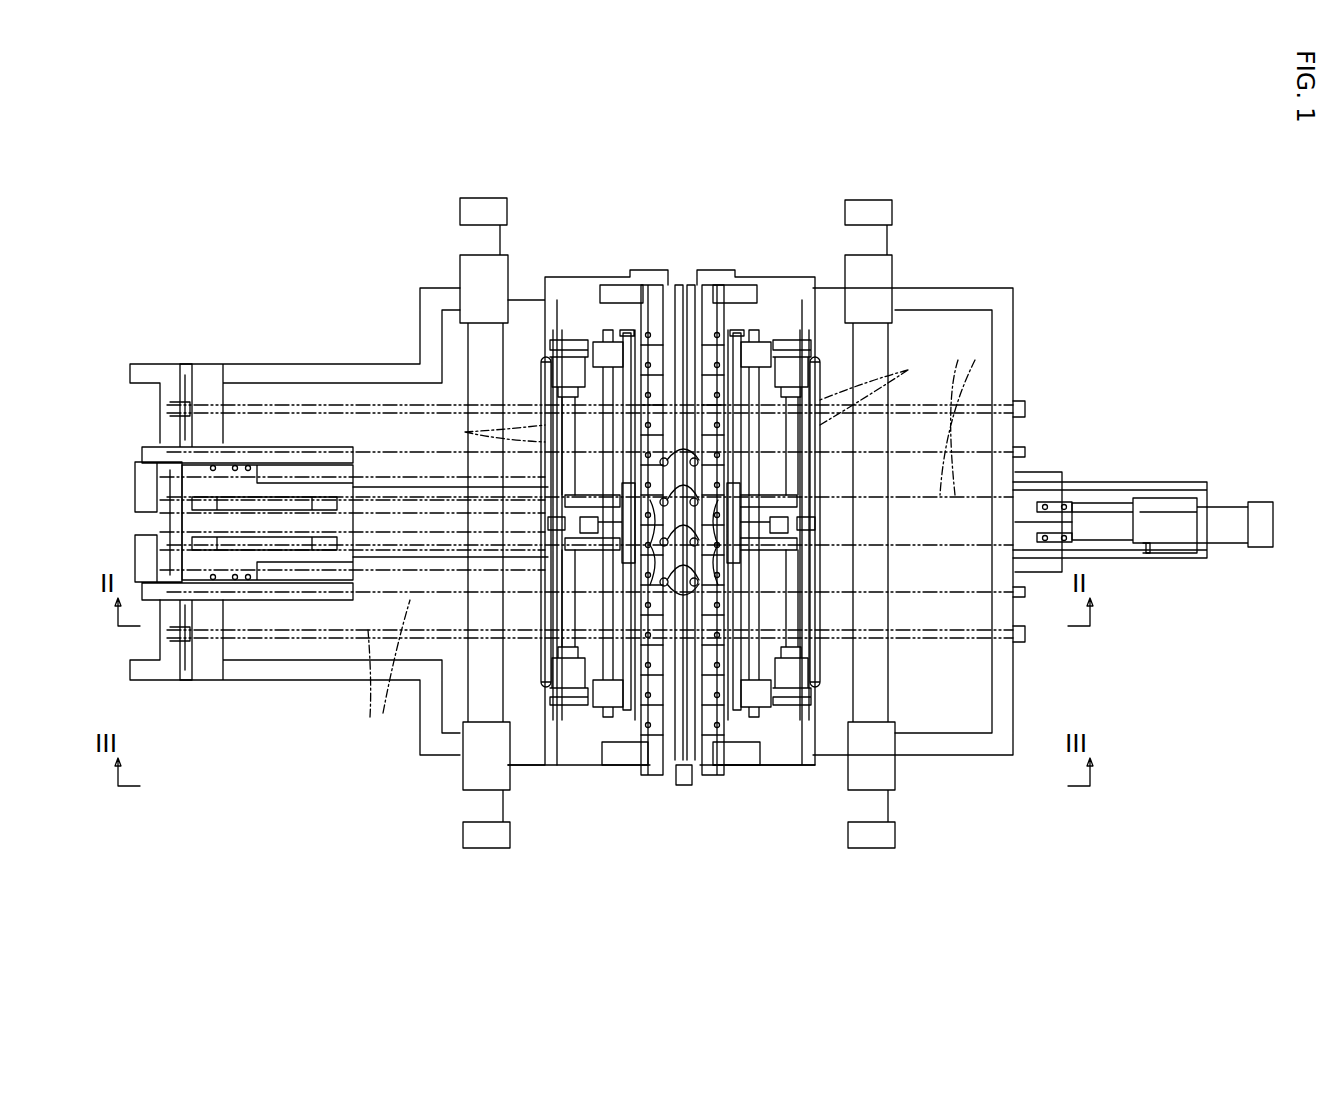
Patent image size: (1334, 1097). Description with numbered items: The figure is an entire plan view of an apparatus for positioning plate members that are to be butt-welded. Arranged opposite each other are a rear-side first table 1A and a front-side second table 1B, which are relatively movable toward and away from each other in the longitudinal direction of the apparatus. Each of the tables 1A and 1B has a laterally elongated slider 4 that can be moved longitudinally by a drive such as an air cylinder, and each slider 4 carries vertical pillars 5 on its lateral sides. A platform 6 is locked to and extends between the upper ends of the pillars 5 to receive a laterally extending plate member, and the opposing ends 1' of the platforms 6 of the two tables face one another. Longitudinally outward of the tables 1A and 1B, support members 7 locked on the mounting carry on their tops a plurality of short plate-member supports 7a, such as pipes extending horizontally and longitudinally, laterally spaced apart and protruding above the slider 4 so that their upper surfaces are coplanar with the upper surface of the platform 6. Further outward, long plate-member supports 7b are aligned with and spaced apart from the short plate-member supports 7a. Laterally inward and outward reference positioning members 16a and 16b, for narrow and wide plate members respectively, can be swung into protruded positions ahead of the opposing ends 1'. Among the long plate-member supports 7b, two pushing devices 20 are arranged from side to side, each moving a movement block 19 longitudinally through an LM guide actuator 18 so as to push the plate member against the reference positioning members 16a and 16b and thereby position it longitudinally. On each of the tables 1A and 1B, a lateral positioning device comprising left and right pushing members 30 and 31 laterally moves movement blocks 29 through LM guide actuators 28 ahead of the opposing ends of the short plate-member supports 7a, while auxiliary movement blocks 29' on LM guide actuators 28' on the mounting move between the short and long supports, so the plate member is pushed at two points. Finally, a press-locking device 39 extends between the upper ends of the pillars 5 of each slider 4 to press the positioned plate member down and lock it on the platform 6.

The first table 1A is at (622, 222).
The second table 1B is at (775, 270).
The opposing ends of the platforms 1' is at (685, 494).
The slider 4 is at (568, 767).
The pillar 5 is at (630, 292).
The platform 6 is at (686, 772).
The support member 7 is at (547, 455).
The short plate-member support 7a is at (687, 401).
The long plate-member support 7b is at (670, 544).
The laterally inward reference positioning member 16a is at (655, 545).
The laterally outward reference positioning member 16b is at (684, 458).
The LM guide actuator 18 is at (294, 478).
The movement block 19 is at (333, 475).
The pushing device 20 is at (704, 524).
The LM guide actuator 28 is at (668, 562).
The LM guide actuator 28' is at (682, 547).
The movement block 29 is at (676, 547).
The auxiliary movement block 29' is at (693, 562).
The left pushing member 30 is at (609, 192).
The right pushing member 31 is at (690, 852).
The press-locking device 39 is at (648, 325).